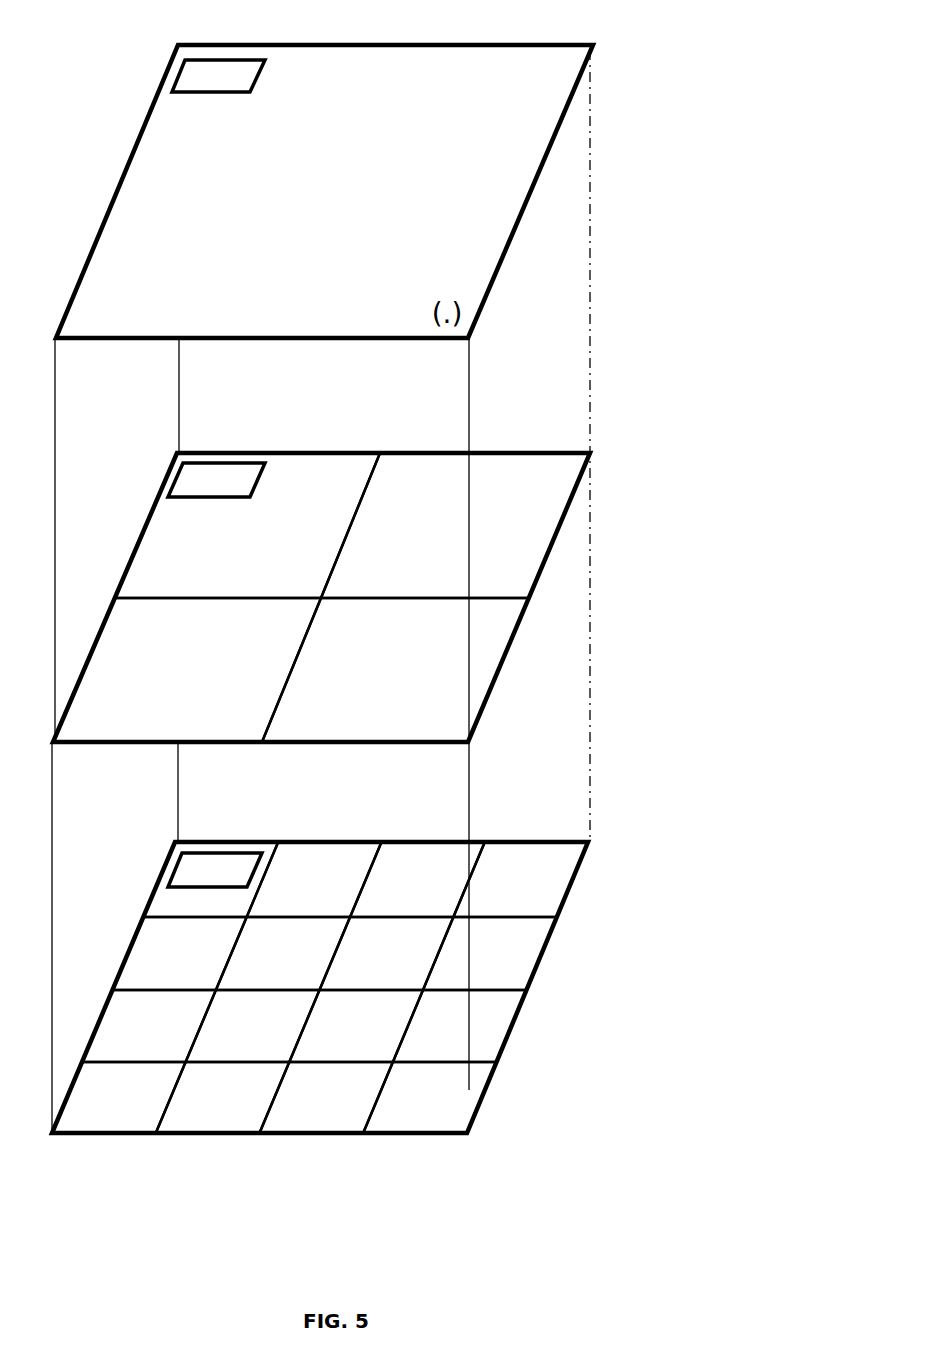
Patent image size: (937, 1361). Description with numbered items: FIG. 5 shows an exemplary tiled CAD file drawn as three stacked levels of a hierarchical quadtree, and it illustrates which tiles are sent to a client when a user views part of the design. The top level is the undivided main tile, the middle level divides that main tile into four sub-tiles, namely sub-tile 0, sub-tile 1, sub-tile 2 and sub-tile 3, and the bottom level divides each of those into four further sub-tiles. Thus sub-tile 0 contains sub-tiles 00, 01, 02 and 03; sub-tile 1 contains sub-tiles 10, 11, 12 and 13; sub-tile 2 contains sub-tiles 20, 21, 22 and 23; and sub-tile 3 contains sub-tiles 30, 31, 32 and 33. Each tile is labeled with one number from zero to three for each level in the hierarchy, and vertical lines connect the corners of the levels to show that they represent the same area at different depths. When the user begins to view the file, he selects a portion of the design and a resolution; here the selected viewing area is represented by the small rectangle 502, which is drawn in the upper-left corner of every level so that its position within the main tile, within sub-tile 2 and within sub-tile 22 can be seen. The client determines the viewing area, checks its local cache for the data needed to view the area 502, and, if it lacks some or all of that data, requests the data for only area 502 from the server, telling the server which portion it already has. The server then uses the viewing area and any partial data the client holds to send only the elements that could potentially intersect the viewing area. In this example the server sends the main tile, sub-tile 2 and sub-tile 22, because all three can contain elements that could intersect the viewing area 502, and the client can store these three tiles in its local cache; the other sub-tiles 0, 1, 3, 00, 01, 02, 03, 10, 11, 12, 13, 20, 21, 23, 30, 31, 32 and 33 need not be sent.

The rectangle 502 is at (182, 80).
The sub-tile (.0) 0 is at (187, 670).
The sub-tile (.1) 1 is at (395, 670).
The sub-tile (.2) 2 is at (247, 525).
The sub-tile (.3) 3 is at (455, 525).
The sub-tile (.0.0) 00 is at (119, 1097).
The sub-tile (.0.1) 01 is at (222, 1097).
The sub-tile (.0.2) 02 is at (149, 1026).
The sub-tile (.0.3) 03 is at (253, 1026).
The sub-tile (.1.0) 10 is at (326, 1097).
The sub-tile (.1.1) 11 is at (429, 1097).
The sub-tile (.1.2) 12 is at (356, 1026).
The sub-tile (.1.3) 13 is at (460, 1026).
The sub-tile (.2.0) 20 is at (179, 953).
The sub-tile (.2.1) 21 is at (283, 953).
The sub-tile (.2.2) 22 is at (210, 879).
The sub-tile (.2.3) 23 is at (314, 879).
The sub-tile (.3.0) 30 is at (387, 953).
The sub-tile (.3.1) 31 is at (490, 953).
The sub-tile (.3.2) 32 is at (417, 879).
The sub-tile (.3.3) 33 is at (520, 879).